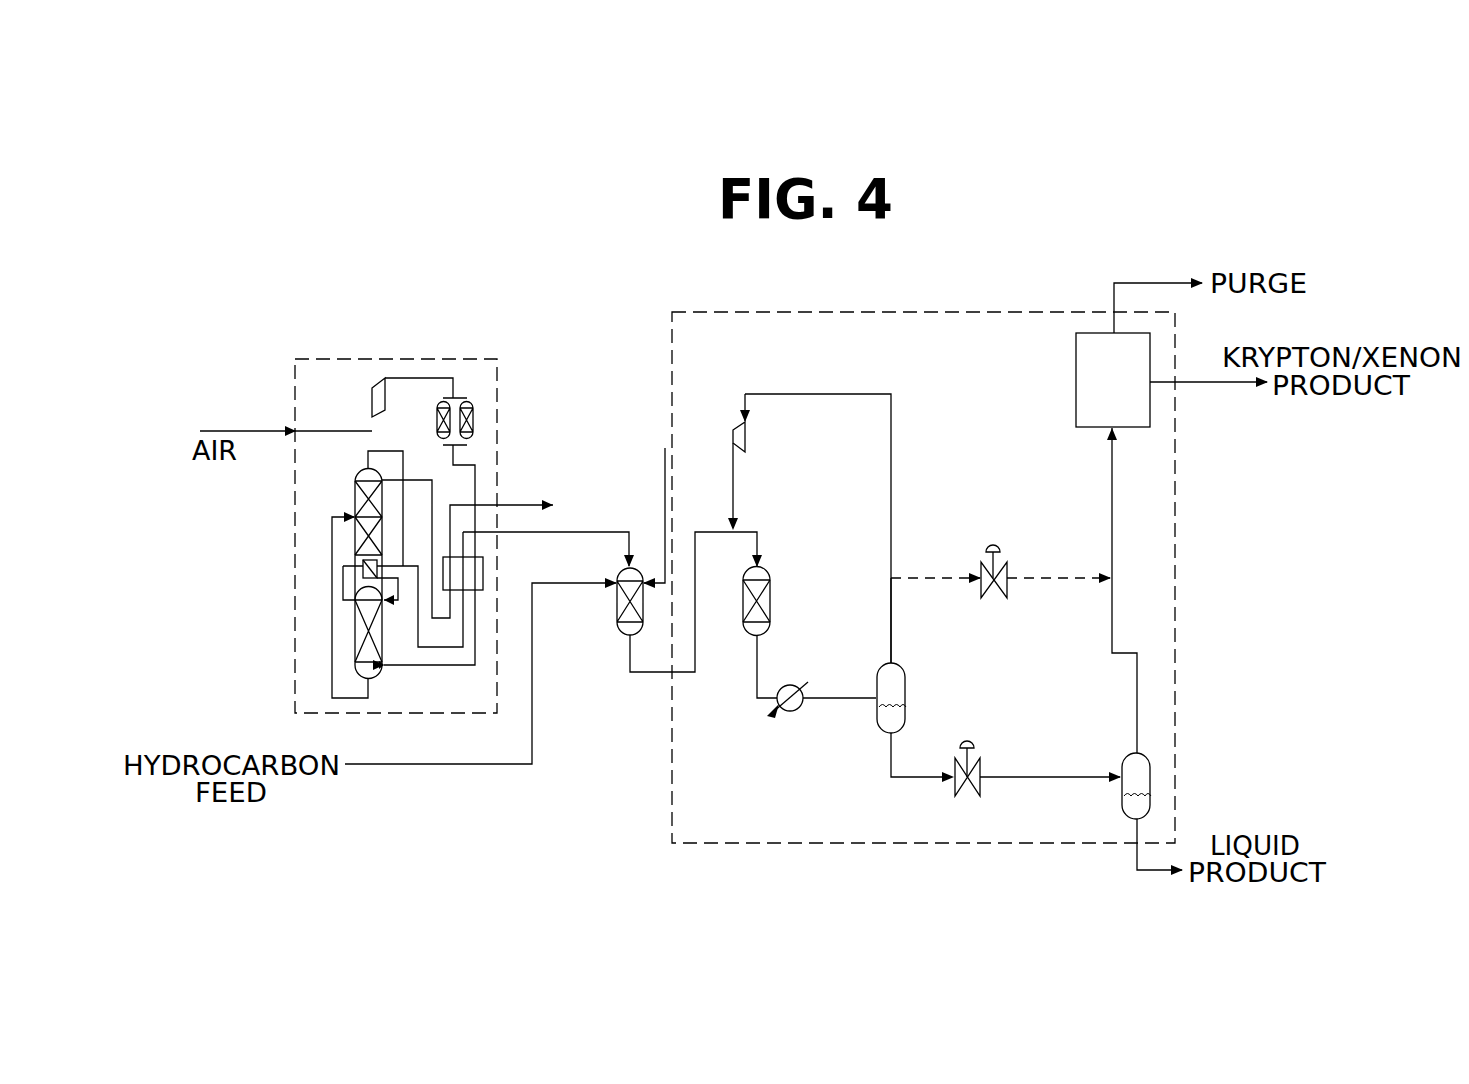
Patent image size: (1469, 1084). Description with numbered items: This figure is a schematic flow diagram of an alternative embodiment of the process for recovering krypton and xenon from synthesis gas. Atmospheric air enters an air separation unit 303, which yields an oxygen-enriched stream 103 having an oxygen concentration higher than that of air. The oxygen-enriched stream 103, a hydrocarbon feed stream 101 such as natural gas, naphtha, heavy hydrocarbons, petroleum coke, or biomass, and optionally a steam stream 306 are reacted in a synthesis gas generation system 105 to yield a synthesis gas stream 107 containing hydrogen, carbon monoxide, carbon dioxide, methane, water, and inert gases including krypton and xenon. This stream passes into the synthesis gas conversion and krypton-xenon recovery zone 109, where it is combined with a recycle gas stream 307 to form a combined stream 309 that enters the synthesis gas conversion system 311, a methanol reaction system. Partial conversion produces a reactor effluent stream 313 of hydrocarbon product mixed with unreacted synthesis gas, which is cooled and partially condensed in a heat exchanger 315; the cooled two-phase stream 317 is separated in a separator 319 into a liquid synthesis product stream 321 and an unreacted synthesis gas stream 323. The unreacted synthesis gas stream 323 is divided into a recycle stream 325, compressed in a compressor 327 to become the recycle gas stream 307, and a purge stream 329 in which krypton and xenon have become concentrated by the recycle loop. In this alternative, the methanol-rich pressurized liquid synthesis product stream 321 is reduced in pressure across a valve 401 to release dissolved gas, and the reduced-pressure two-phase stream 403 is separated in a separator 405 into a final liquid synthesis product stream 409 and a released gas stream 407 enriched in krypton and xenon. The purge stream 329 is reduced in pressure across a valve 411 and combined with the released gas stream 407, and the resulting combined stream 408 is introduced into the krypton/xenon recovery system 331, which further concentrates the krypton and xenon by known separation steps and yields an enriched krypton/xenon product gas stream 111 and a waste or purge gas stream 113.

The hydrocarbon feed stream 101 is at (562, 584).
The oxygen-enriched stream 103 is at (529, 533).
The synthesis gas generation system 105 is at (618, 628).
The synthesis gas stream 107 is at (648, 674).
The synthesis gas conversion and krypton-xenon recovery zone 109 is at (671, 362).
The enriched krypton/xenon product gas stream 111 is at (1210, 384).
The waste or purge gas stream 113 is at (1138, 282).
The air separation unit 303 is at (346, 358).
The steam stream 306 is at (664, 491).
The recycle gas stream 307 is at (732, 500).
The combined stream 309 is at (790, 538).
The synthesis gas conversion system 311 is at (800, 598).
The reactor effluent stream 313 is at (782, 665).
The heat exchanger 315 is at (800, 710).
The cooled stream line 317 is at (845, 697).
The separator 319 is at (937, 695).
The liquid synthesis product stream 321 is at (900, 779).
The unreacted synthesis gas stream 323 is at (890, 634).
The recycle stream 325 is at (890, 548).
The compressor 327 is at (778, 430).
The purge stream 329 is at (928, 580).
The krypton/xenon recovery system 331 is at (1075, 348).
The valve 401 is at (969, 741).
The reduced-pressure two-phase stream 403 is at (1054, 779).
The separator 405 is at (1126, 757).
The released gas stream 407 is at (1125, 650).
The combined stream 408 is at (1110, 472).
The final liquid synthesis product stream 409 is at (1148, 872).
The valve 411 is at (996, 545).